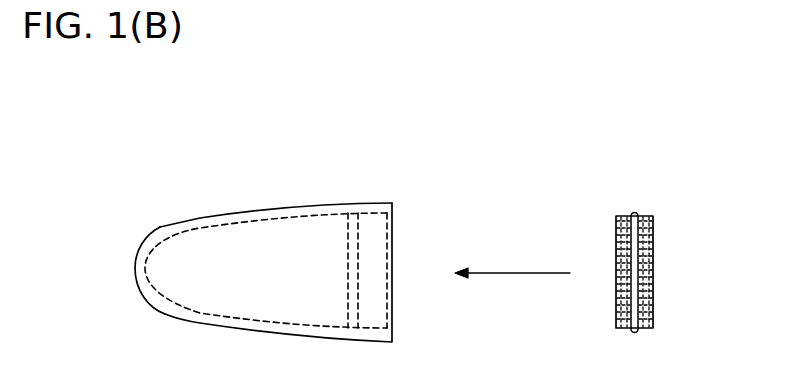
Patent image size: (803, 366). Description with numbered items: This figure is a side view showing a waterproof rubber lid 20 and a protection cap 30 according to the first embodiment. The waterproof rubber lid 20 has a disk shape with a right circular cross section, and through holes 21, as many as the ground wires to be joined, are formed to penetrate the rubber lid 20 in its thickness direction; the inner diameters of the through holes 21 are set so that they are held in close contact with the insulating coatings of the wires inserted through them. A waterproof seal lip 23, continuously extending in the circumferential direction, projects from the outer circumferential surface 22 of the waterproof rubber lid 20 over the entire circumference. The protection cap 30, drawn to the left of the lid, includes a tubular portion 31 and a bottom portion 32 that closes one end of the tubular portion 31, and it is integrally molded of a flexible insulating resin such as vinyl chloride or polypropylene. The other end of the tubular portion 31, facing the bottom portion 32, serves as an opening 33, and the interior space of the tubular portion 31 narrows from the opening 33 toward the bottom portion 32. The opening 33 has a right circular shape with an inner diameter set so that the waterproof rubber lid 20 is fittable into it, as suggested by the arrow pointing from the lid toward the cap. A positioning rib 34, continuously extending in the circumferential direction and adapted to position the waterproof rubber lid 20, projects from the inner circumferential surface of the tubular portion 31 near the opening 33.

The waterproof rubber lid 20 is at (644, 237).
The through holes 21 is at (657, 245).
The outer circumferential surface 22 is at (648, 214).
The waterproof seal lip 23 is at (645, 237).
The protection cap 30 is at (221, 212).
The tubular portion 31 is at (262, 210).
The bottom portion 32 is at (136, 278).
The opening 33 is at (384, 250).
The positioning rib 34 is at (384, 233).